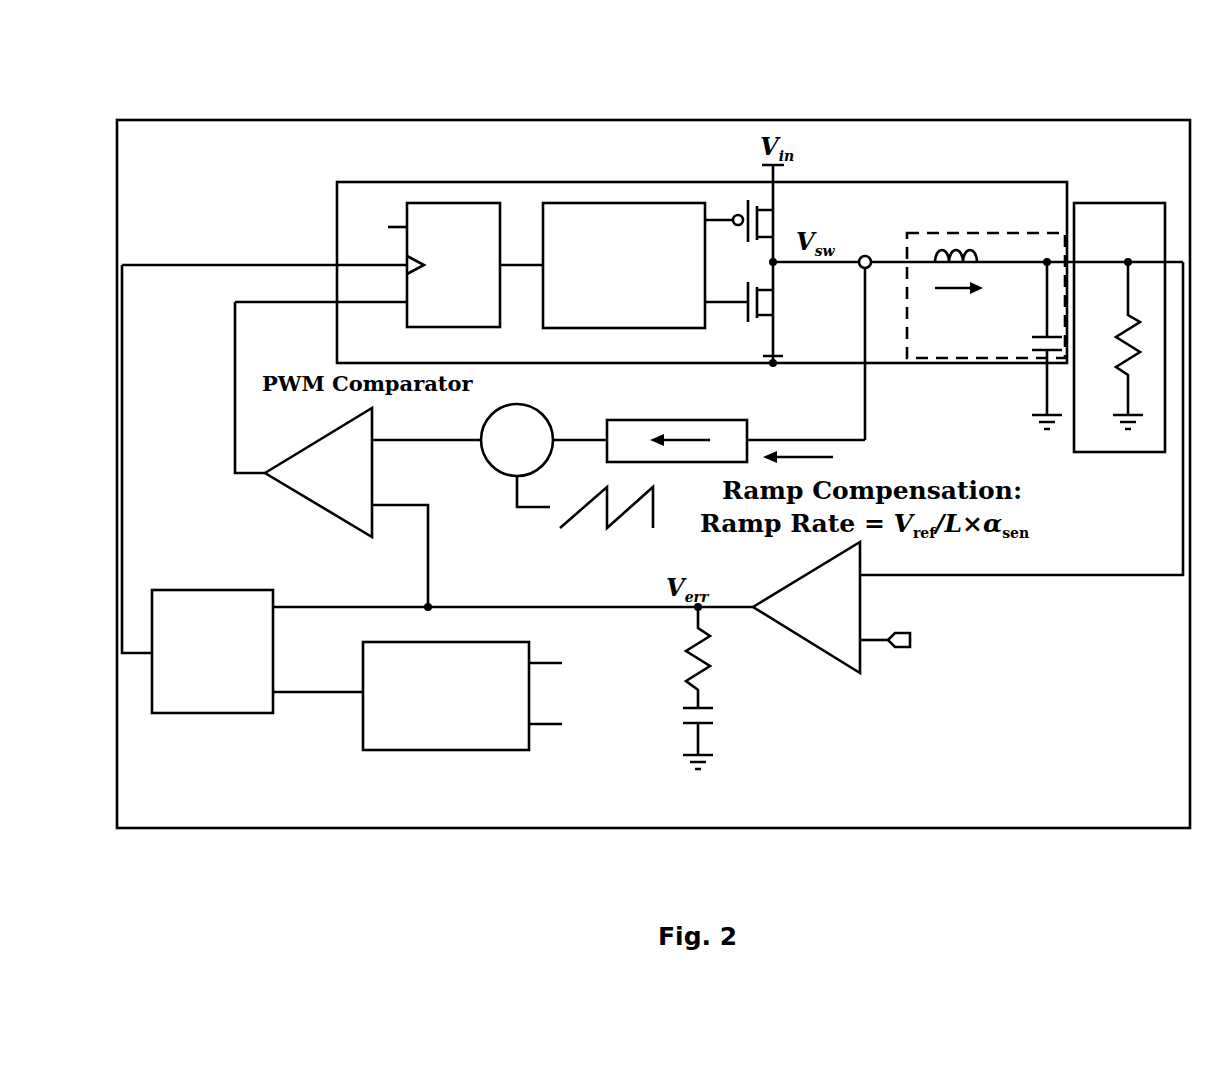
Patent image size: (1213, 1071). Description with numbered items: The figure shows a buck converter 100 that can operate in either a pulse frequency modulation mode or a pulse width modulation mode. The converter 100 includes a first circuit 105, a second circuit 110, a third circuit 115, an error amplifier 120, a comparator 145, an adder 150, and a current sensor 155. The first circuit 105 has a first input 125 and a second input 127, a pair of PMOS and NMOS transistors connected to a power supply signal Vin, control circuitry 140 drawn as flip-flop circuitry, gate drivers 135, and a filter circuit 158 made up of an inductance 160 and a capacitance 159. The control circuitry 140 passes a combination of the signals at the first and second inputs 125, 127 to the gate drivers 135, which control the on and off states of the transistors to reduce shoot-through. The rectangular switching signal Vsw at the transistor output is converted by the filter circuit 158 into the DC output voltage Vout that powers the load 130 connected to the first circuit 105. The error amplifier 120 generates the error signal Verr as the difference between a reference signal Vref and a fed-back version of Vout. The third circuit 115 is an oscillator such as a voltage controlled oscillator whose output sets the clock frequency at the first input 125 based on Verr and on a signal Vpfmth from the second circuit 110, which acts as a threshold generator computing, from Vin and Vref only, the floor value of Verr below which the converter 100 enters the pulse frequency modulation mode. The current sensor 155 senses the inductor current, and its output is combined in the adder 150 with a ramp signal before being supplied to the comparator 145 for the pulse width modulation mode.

The converter 100 is at (252, 88).
The first circuit 105 is at (820, 182).
The second circuit 110 is at (465, 750).
The third circuit 115 is at (200, 713).
The error amplifier 120 is at (860, 670).
The first input 125 is at (337, 265).
The second input 127 is at (335, 305).
The load 130 is at (1110, 203).
The gate drivers 135 is at (597, 203).
The control circuitry 140 is at (445, 203).
The comparator 145 is at (265, 480).
The adder 150 is at (548, 421).
The current sensor 155 is at (640, 420).
The filter circuit 158 is at (1007, 233).
The capacitance 159 is at (1027, 340).
The inductance 160 is at (930, 245).